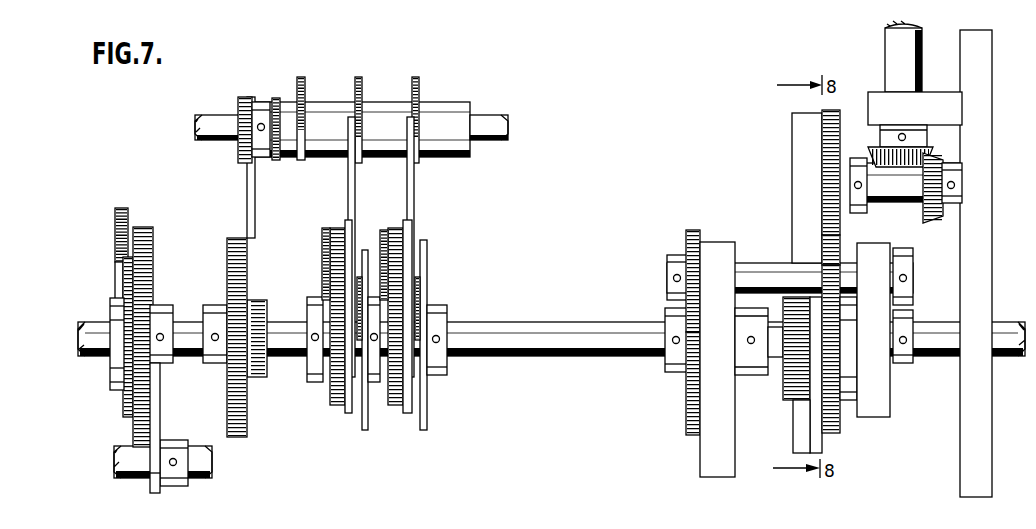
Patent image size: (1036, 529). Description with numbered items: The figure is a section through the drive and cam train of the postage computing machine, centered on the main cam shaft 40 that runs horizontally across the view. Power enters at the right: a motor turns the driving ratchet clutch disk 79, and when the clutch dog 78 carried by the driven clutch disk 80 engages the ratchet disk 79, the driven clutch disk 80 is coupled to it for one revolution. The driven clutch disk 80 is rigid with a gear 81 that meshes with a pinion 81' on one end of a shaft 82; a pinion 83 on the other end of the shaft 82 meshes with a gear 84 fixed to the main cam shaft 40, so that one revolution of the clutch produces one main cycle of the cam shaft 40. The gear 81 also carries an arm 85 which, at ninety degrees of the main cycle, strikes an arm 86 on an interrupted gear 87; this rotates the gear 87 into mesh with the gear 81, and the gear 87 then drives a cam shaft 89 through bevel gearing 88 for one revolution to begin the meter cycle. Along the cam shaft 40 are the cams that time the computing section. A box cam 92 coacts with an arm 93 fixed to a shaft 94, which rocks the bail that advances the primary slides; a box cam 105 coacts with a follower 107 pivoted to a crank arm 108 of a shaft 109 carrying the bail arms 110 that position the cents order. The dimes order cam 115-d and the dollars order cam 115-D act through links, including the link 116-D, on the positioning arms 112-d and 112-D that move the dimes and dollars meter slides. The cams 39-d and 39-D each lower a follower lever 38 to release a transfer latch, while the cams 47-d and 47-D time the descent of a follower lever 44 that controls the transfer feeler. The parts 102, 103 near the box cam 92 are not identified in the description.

The main cam shaft 40 is at (521, 357).
The shaft 82 is at (762, 263).
The shaft 94 is at (130, 480).
The shaft 109 is at (208, 118).
The plate 102 is at (117, 222).
The hub 103 is at (123, 408).
The box cam 92 is at (153, 262).
The arm 93 is at (161, 411).
The box cam 105 is at (236, 437).
The follower 107 is at (247, 190).
The crank arm 108 is at (238, 152).
The bail arms 110 is at (271, 162).
The dimes positioning arm 112-d is at (362, 78).
The dollars positioning arm 112-D is at (420, 78).
The link 116-D is at (355, 197).
The dimes order cam 39-d is at (333, 406).
The dimes order cam 115-d is at (348, 414).
The dimes order cam 47-d is at (365, 431).
The dollars order cam 39-D is at (392, 406).
The dollars order cam 115-D is at (408, 414).
The dollars order cam 47-D is at (427, 418).
The follower lever 38 is at (325, 235).
The follower lever 44 is at (357, 297).
The pinion 83 is at (688, 238).
The gear 84 is at (688, 400).
The driving ratchet clutch disk 79 is at (790, 375).
The driven clutch disk 80 is at (818, 440).
The clutch dog 78 is at (800, 440).
The interrupted gear 87 is at (823, 127).
The pinion 81' is at (859, 243).
The gear 81 is at (868, 358).
The arm 85 is at (857, 395).
The cam shaft 89 is at (895, 44).
The bevel gearing 88 is at (933, 223).
The arm 86 is at (856, 158).